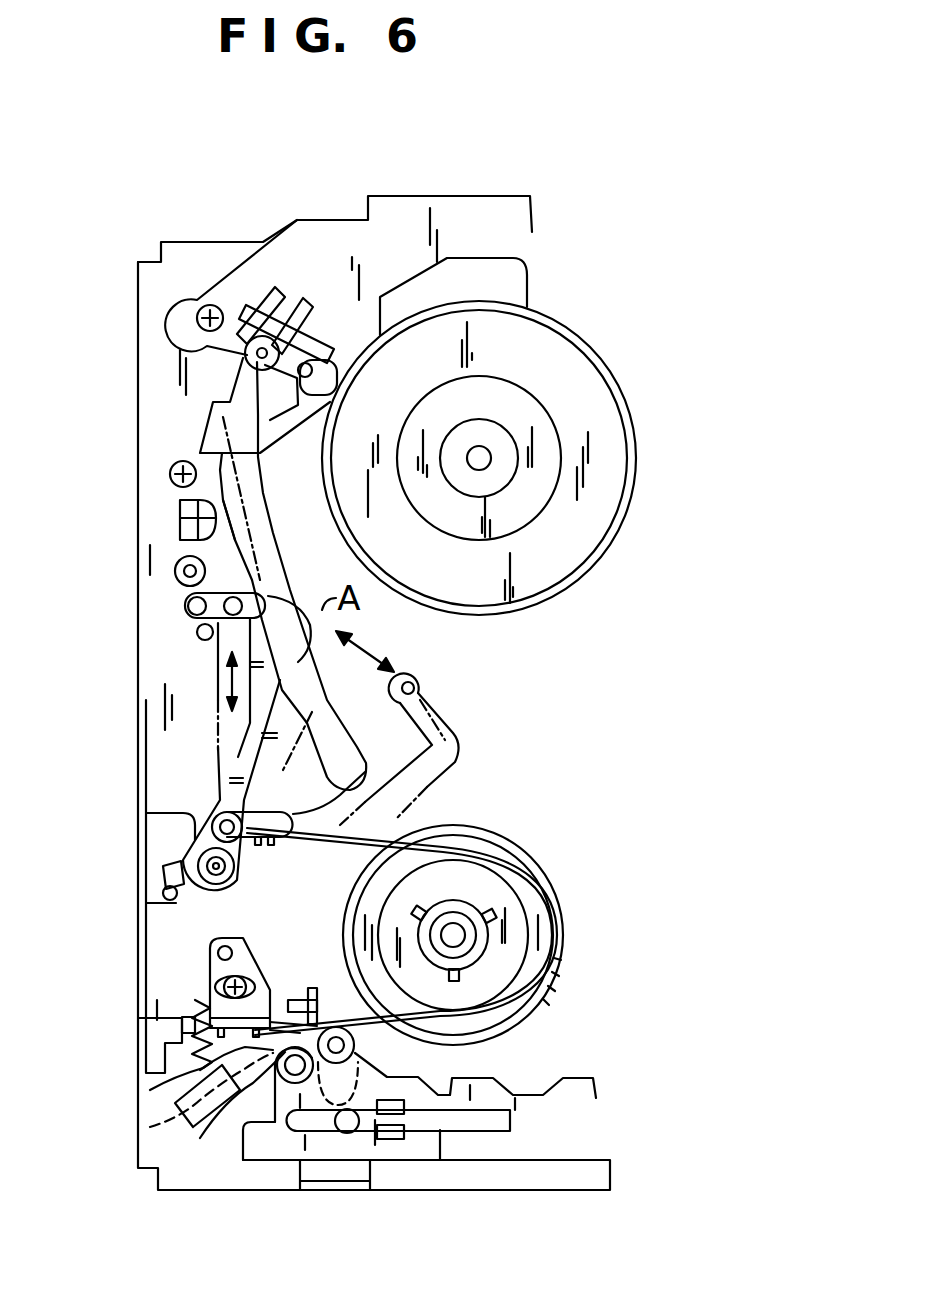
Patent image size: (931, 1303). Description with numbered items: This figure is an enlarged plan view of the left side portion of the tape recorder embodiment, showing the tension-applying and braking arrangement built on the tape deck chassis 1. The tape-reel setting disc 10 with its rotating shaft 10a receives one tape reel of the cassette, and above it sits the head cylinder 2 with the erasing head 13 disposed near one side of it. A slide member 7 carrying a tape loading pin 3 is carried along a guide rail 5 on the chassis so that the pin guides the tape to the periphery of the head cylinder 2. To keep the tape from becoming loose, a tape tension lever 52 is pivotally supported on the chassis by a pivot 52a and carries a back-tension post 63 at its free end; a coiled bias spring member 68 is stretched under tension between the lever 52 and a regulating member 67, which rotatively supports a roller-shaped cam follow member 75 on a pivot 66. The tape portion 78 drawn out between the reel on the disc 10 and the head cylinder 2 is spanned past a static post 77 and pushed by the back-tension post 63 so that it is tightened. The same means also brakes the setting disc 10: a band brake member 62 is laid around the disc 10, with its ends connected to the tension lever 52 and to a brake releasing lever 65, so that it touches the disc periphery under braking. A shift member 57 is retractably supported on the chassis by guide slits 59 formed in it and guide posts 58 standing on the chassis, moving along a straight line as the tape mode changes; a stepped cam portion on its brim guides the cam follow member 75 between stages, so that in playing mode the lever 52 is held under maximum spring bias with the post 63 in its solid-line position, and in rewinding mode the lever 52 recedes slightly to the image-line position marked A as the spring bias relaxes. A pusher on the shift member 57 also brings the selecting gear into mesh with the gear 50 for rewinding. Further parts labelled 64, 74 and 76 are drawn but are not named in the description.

The tape deck chassis 1 is at (150, 300).
The head cylinder 2 is at (570, 380).
The tape loading pin 3 is at (250, 352).
The guide rail 5 is at (330, 707).
The slide member 7 is at (217, 443).
The tape-reel setting disc 10 is at (485, 893).
The rotating shaft 10a is at (472, 947).
The erasing head 13 is at (178, 508).
The gear 50 is at (522, 848).
The tape tension lever 52 is at (237, 752).
The pivot 52a is at (222, 868).
The shift member 57 is at (273, 1150).
The guide post 58 is at (348, 1132).
The guide slit 59 is at (488, 1125).
The band brake member 62 is at (455, 850).
The back-tension post 63 is at (192, 607).
The arm 64 is at (285, 838).
The brake releasing lever 65 is at (257, 993).
The pivot 66 is at (213, 1113).
The regulating member 67 is at (150, 1127).
The coiled bias spring member 68 is at (150, 1090).
The pin 74 is at (312, 1000).
The cam follow member 75 is at (352, 1052).
The roller 76 is at (187, 570).
The static post 77 is at (205, 635).
The tape portion 78 is at (213, 547).